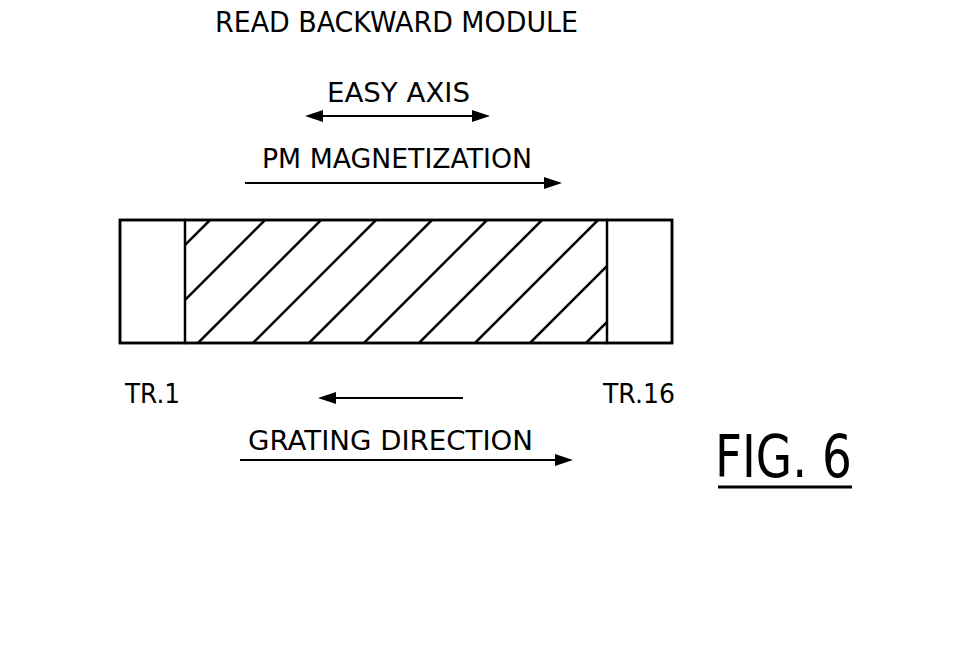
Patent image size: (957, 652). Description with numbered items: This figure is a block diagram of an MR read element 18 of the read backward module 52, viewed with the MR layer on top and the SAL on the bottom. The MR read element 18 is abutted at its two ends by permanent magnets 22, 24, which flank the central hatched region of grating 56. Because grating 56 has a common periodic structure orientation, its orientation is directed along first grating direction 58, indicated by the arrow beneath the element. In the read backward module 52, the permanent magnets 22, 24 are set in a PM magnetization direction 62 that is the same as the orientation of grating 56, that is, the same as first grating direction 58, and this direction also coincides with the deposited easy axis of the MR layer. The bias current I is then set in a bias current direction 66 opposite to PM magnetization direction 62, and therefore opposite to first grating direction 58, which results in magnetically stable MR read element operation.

The MR read element 18 is at (567, 218).
The permanent magnet 22 is at (137, 275).
The permanent magnet 24 is at (667, 282).
The read backward module 52 is at (727, 168).
The grating 56 is at (225, 230).
The first grating direction 58 is at (440, 465).
The PM magnetization direction 62 is at (418, 187).
The bias current direction 66 is at (443, 397).